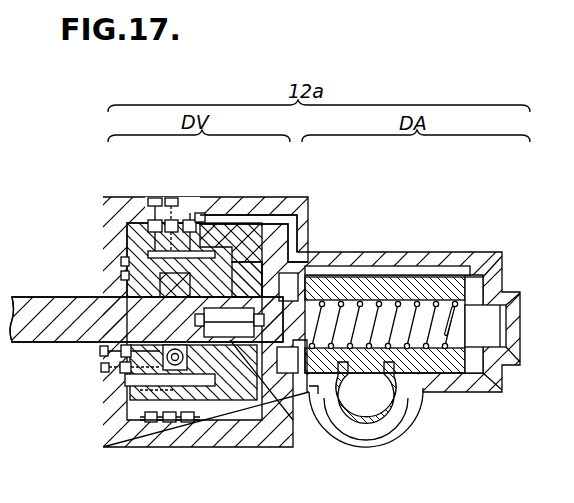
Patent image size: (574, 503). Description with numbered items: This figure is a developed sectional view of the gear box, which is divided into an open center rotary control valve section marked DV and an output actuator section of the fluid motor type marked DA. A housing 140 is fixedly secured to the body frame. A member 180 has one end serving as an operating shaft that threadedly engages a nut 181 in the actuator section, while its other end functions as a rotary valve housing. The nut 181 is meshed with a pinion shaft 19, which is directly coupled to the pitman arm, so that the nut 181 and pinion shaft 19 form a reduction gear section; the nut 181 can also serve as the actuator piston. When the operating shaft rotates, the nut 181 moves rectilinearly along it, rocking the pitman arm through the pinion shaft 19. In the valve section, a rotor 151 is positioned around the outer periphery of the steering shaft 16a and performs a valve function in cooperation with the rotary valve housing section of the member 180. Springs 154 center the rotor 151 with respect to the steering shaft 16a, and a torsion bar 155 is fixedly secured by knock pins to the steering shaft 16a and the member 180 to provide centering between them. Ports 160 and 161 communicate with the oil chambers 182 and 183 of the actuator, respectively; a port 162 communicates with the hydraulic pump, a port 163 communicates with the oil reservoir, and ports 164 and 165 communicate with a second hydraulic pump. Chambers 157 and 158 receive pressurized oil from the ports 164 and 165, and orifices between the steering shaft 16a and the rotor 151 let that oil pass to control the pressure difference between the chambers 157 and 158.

The steering shaft 16a is at (30, 297).
The pinion shaft 19 is at (370, 414).
The housing 140 is at (119, 438).
The rotor 151 is at (219, 392).
The springs 154 is at (174, 370).
The torsion bar 155 is at (280, 400).
The chamber 157 is at (124, 384).
The chamber 158 is at (122, 434).
The port 160 is at (192, 232).
The port 161 is at (203, 245).
The port 162 is at (154, 197).
The port 163 is at (172, 197).
The port 164 is at (100, 351).
The port 165 is at (101, 368).
The member 180 is at (248, 410).
The nut 181 is at (451, 374).
The oil chamber 182 is at (478, 280).
The oil chamber 183 is at (296, 278).